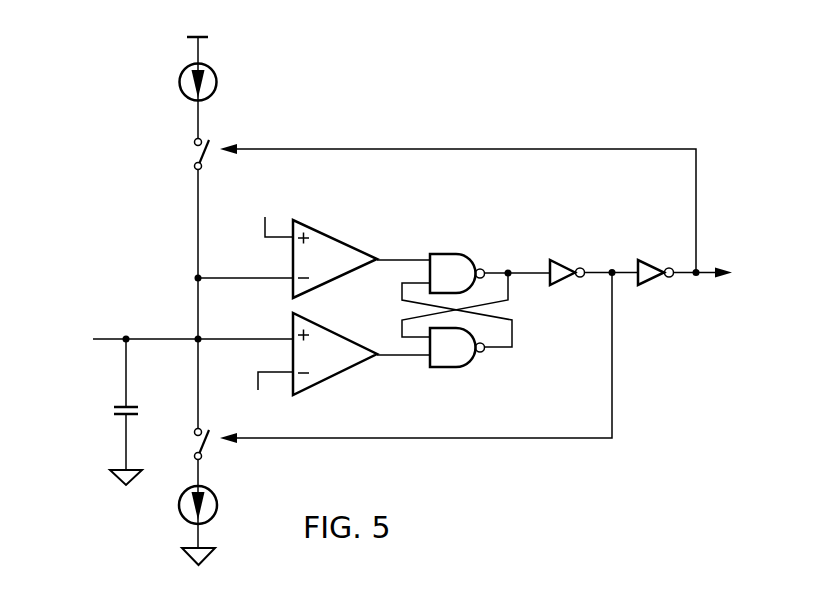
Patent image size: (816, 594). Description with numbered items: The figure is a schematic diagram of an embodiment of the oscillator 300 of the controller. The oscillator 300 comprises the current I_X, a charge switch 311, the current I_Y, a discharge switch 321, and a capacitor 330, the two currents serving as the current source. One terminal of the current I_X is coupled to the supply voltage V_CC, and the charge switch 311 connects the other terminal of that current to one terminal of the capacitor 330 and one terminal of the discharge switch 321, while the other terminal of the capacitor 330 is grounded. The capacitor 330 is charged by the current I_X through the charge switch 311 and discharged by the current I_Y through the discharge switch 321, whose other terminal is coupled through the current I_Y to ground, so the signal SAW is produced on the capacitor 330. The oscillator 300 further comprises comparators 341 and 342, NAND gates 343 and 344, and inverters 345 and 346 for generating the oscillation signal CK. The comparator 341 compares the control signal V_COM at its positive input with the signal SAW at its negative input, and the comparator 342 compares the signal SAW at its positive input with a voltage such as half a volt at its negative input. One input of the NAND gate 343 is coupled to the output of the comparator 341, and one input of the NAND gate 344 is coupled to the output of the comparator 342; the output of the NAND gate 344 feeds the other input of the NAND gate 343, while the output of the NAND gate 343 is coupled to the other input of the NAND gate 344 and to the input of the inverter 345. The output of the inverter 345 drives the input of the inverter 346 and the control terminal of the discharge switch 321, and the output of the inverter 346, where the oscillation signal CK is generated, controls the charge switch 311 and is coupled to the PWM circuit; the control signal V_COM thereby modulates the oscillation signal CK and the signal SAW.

The oscillator 300 is at (627, 42).
The charge switch 311 is at (181, 154).
The discharge switch 321 is at (183, 444).
The capacitor 330 is at (106, 412).
The comparator 341 is at (335, 254).
The comparator 342 is at (335, 349).
The NAND gate 343 is at (455, 261).
The NAND gate 344 is at (457, 362).
The inverter 345 is at (573, 263).
The inverter 346 is at (662, 262).